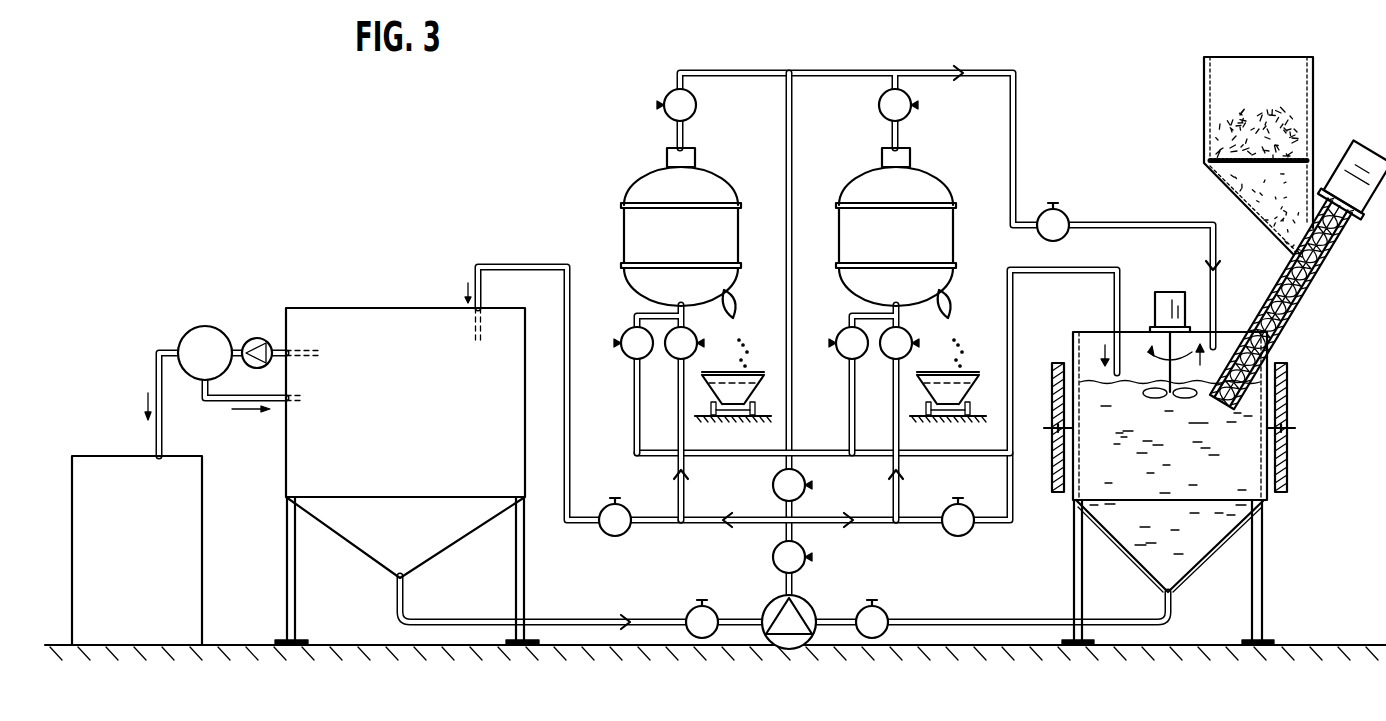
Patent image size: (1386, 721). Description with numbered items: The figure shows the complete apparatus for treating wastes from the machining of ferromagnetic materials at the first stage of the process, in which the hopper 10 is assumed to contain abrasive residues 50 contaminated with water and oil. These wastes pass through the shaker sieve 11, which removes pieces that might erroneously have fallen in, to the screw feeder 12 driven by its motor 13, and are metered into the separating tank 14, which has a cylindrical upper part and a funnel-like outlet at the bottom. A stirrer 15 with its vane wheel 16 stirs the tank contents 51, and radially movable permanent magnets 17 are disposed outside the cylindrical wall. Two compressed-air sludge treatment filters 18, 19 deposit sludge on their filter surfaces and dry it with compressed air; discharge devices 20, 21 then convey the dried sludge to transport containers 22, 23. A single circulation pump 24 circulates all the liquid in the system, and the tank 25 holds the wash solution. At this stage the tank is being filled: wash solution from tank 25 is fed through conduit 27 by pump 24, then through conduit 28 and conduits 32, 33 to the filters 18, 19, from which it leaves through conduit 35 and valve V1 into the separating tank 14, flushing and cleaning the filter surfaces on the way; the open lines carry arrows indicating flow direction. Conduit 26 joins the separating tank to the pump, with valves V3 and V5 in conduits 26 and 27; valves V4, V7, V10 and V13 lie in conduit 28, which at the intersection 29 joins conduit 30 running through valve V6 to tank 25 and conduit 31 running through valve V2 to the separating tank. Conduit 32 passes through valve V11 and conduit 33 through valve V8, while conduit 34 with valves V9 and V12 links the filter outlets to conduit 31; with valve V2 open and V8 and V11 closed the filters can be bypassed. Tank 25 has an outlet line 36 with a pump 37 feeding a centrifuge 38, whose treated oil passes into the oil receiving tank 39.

The hopper 10 is at (1222, 87).
The shaker sieve 11 is at (1225, 150).
The screw feeder 12 is at (1272, 338).
The conveyor drive motor 13 is at (1357, 150).
The separating tank 14 is at (1216, 480).
The stirrer 15 is at (1172, 300).
The vane wheel 16 is at (1150, 390).
The permanent magnets 17 is at (1055, 497).
The compressed-air sludge treatment filter 18 is at (635, 232).
The compressed-air sludge treatment filter 19 is at (942, 232).
The discharge device 20 is at (726, 300).
The discharge device 21 is at (942, 300).
The transport container 22 is at (745, 372).
The transport container 23 is at (962, 372).
The circulation pump 24 is at (790, 648).
The tank 25 is at (352, 330).
The conduit 26 is at (1018, 627).
The conduit 27 is at (595, 627).
The conduit 28 is at (787, 128).
The intersection 29 is at (782, 525).
The conduit 30 is at (650, 525).
The conduit 31 is at (915, 525).
The conduit 32 is at (690, 480).
The conduit 33 is at (890, 490).
The conduit 34 is at (965, 455).
The conduit 35 is at (1016, 128).
The outlet line 36 is at (280, 345).
The pump 37 is at (253, 340).
The centrifuge 38 is at (200, 345).
The oil receiving tank 39 is at (180, 567).
The bulk material 50 is at (1275, 120).
The liquid 51 is at (1242, 452).
The valve V1 is at (1053, 222).
The valve V2 is at (958, 517).
The valve V3 is at (872, 619).
The valve V4 is at (792, 557).
The valve V5 is at (702, 619).
The valve V6 is at (615, 517).
The valve V7 is at (792, 485).
The valve V8 is at (899, 343).
The valve V9 is at (848, 343).
The valve V10 is at (898, 105).
The valve V11 is at (684, 343).
The valve V12 is at (633, 343).
The valve V13 is at (676, 105).